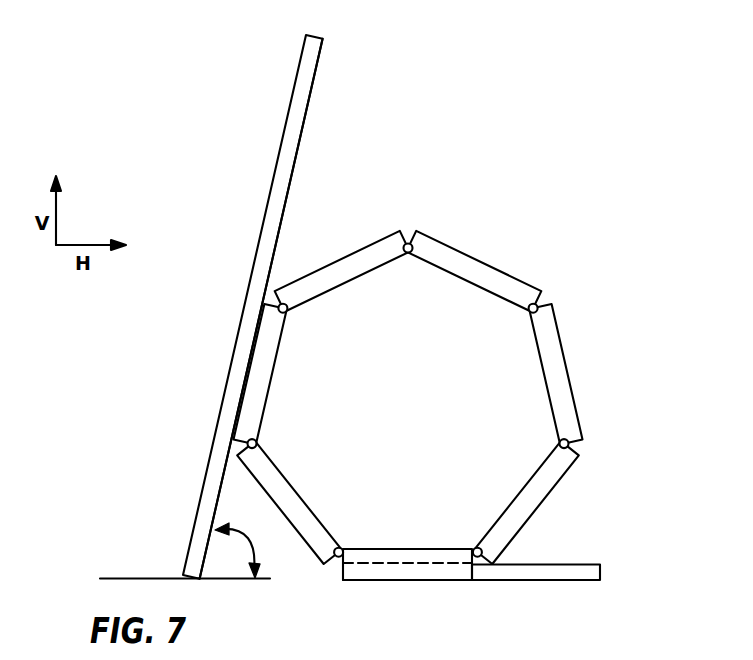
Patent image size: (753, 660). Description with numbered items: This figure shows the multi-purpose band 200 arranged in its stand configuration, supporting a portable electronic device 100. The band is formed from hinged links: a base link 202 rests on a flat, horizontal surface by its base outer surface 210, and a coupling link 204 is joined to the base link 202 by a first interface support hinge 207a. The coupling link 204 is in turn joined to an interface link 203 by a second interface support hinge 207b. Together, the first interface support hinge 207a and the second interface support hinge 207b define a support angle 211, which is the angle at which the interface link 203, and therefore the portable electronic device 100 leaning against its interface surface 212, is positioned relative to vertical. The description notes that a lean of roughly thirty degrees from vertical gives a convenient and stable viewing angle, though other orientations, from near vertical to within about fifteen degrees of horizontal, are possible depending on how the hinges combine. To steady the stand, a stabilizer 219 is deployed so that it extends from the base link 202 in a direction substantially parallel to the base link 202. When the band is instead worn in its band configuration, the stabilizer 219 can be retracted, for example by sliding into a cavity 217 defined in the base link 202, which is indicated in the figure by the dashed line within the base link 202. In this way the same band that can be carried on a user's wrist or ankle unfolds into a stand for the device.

The portable electronic device 100 is at (277, 162).
The multi-purpose band 200 is at (433, 417).
The base link 202 is at (405, 592).
The interface link 203 is at (267, 357).
The coupling link 204 is at (298, 497).
The first interface support hinge 207a is at (336, 558).
The second interface support hinge 207b is at (257, 442).
The base outer surface 210 is at (352, 582).
The support angle 211 is at (248, 531).
The interface surface 212 is at (242, 382).
The cavity 217 is at (453, 570).
The stabilizer 219 is at (575, 563).